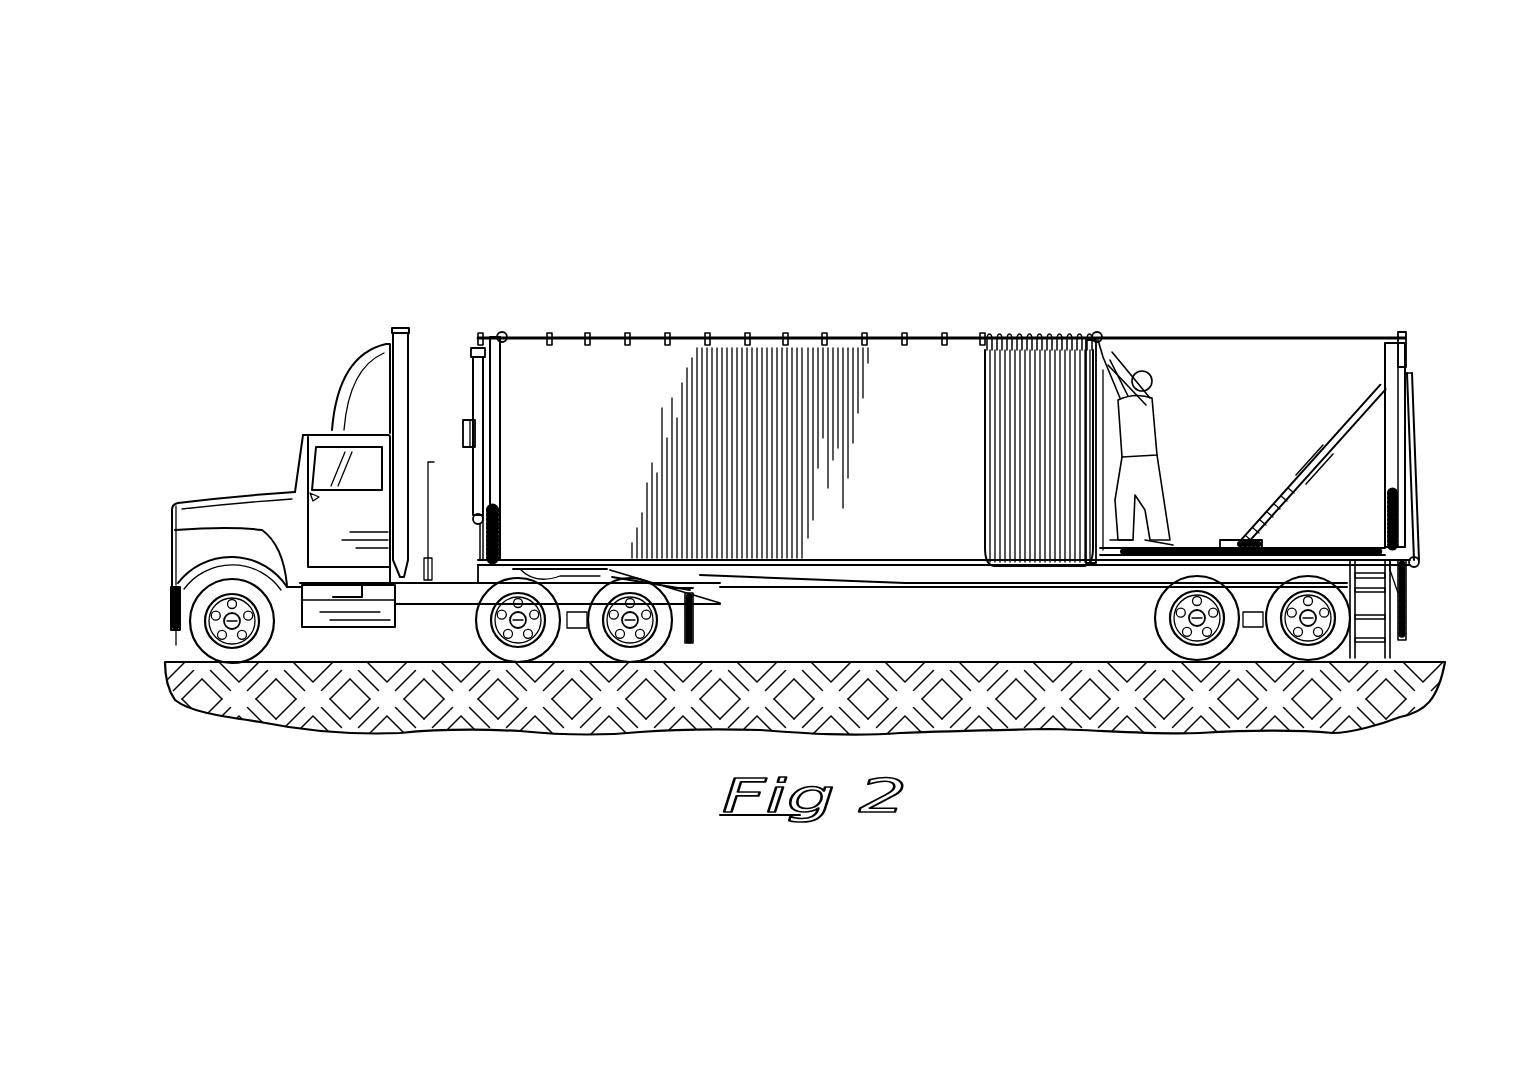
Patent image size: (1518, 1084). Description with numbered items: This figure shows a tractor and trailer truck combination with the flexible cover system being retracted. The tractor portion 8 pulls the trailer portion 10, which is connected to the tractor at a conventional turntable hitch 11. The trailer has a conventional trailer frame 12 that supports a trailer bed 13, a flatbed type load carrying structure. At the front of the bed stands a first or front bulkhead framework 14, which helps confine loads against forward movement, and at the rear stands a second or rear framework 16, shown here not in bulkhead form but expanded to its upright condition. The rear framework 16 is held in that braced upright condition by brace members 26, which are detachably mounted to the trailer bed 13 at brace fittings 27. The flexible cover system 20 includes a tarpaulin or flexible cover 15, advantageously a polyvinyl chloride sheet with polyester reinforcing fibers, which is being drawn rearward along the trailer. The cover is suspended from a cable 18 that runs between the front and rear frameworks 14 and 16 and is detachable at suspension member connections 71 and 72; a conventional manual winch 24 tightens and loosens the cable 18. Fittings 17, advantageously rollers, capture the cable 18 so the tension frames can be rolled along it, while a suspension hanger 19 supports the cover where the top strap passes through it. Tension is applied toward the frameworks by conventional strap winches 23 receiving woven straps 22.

The tractor portion 8 is at (237, 428).
The trailer portion 10 is at (1188, 257).
The turntable hitch 11 is at (546, 560).
The trailer frame 12 is at (1000, 577).
The trailer bed 13 is at (1190, 546).
The front bulkhead framework 14 is at (492, 401).
The flexible cover 15 is at (918, 471).
The rear framework 16 is at (1392, 463).
The fittings 17 is at (504, 333).
The cable 18 is at (686, 336).
The suspension hanger 19 is at (903, 336).
The flexible cover system 20 is at (957, 300).
The straps 22 is at (466, 462).
The strap winches 23 is at (473, 522).
The manual winch 24 is at (462, 430).
The brace members 26 is at (1335, 432).
The brace fittings 27 is at (1230, 540).
The suspension member connection 71 is at (473, 353).
The suspension member connection 72 is at (1408, 336).